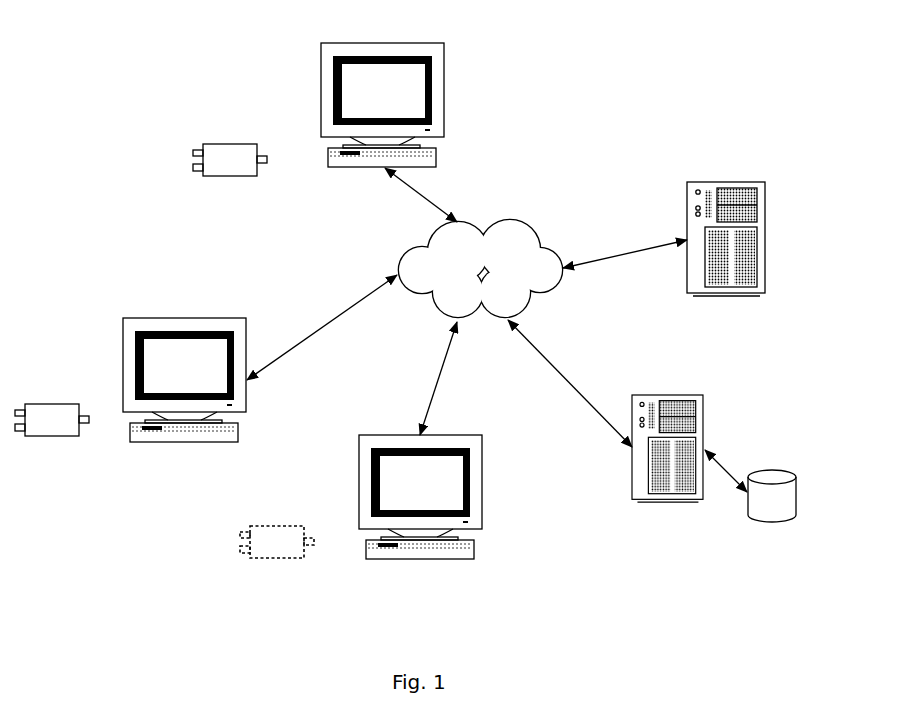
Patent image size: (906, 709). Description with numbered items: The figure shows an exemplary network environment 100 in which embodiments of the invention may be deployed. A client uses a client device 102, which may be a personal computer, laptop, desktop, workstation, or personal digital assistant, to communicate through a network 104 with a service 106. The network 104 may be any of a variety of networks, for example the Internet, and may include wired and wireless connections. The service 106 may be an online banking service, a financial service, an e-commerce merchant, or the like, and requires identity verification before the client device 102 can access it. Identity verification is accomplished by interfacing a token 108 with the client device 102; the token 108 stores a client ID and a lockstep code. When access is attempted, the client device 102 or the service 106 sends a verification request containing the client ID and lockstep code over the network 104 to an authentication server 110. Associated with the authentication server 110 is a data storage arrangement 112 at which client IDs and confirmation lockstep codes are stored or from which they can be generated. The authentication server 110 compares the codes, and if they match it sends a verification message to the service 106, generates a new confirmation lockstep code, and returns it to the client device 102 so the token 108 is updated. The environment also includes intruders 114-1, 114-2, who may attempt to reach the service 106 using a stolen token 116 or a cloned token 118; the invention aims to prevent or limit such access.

The network environment 100 is at (118, 80).
The client device 102 is at (445, 104).
The network 104 is at (497, 280).
The service 106 is at (727, 179).
The token 108 is at (226, 143).
The authentication server 110 is at (665, 393).
The data storage arrangement 112 is at (773, 520).
The intruder 114-1 is at (182, 318).
The intruder 114-2 is at (423, 560).
The stolen token 116 is at (52, 437).
The cloned token 118 is at (275, 558).